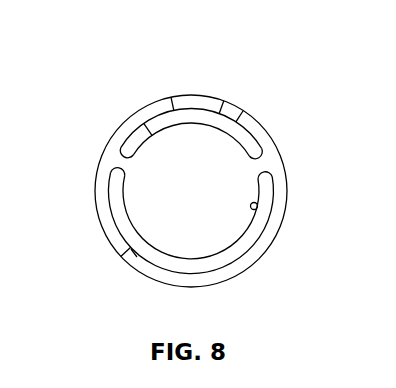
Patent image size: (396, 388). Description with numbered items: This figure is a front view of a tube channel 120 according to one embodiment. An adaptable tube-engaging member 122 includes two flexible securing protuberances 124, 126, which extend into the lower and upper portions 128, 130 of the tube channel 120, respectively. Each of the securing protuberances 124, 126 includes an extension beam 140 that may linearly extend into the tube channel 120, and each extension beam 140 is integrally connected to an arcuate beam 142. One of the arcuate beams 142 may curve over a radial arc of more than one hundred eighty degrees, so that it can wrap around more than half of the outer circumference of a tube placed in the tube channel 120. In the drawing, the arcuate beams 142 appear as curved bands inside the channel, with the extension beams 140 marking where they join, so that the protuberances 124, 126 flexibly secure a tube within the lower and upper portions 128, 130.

The tube channel 120 is at (110, 64).
The adaptable tube-engaging member 122 is at (195, 109).
The securing protuberance 124 is at (113, 183).
The securing protuberance 126 is at (176, 96).
The lower portion 128 is at (266, 264).
The upper portion 130 is at (224, 98).
The extension beam 140 is at (248, 119).
The arcuate beam 142 is at (122, 136).